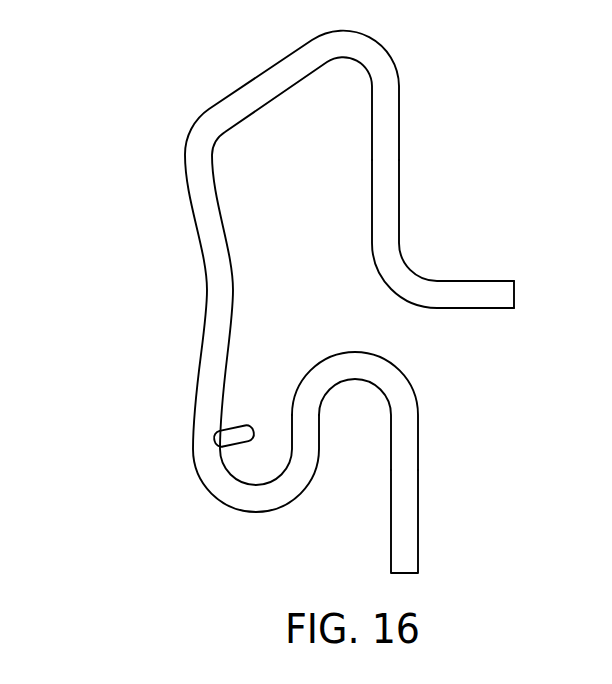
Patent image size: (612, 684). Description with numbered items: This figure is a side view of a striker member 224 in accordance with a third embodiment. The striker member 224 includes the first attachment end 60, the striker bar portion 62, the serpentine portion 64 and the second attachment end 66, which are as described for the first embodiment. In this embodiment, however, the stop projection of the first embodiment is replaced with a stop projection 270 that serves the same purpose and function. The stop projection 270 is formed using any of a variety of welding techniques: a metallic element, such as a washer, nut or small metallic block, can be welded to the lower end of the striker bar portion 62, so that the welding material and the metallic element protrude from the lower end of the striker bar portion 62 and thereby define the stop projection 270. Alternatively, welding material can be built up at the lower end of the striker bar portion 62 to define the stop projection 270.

The striker member 224 is at (163, 100).
The first attachment end 60 is at (483, 292).
The striker bar portion 62 is at (219, 281).
The serpentine portion 64 is at (310, 438).
The second attachment end 66 is at (407, 522).
The stop projection 270 is at (245, 427).